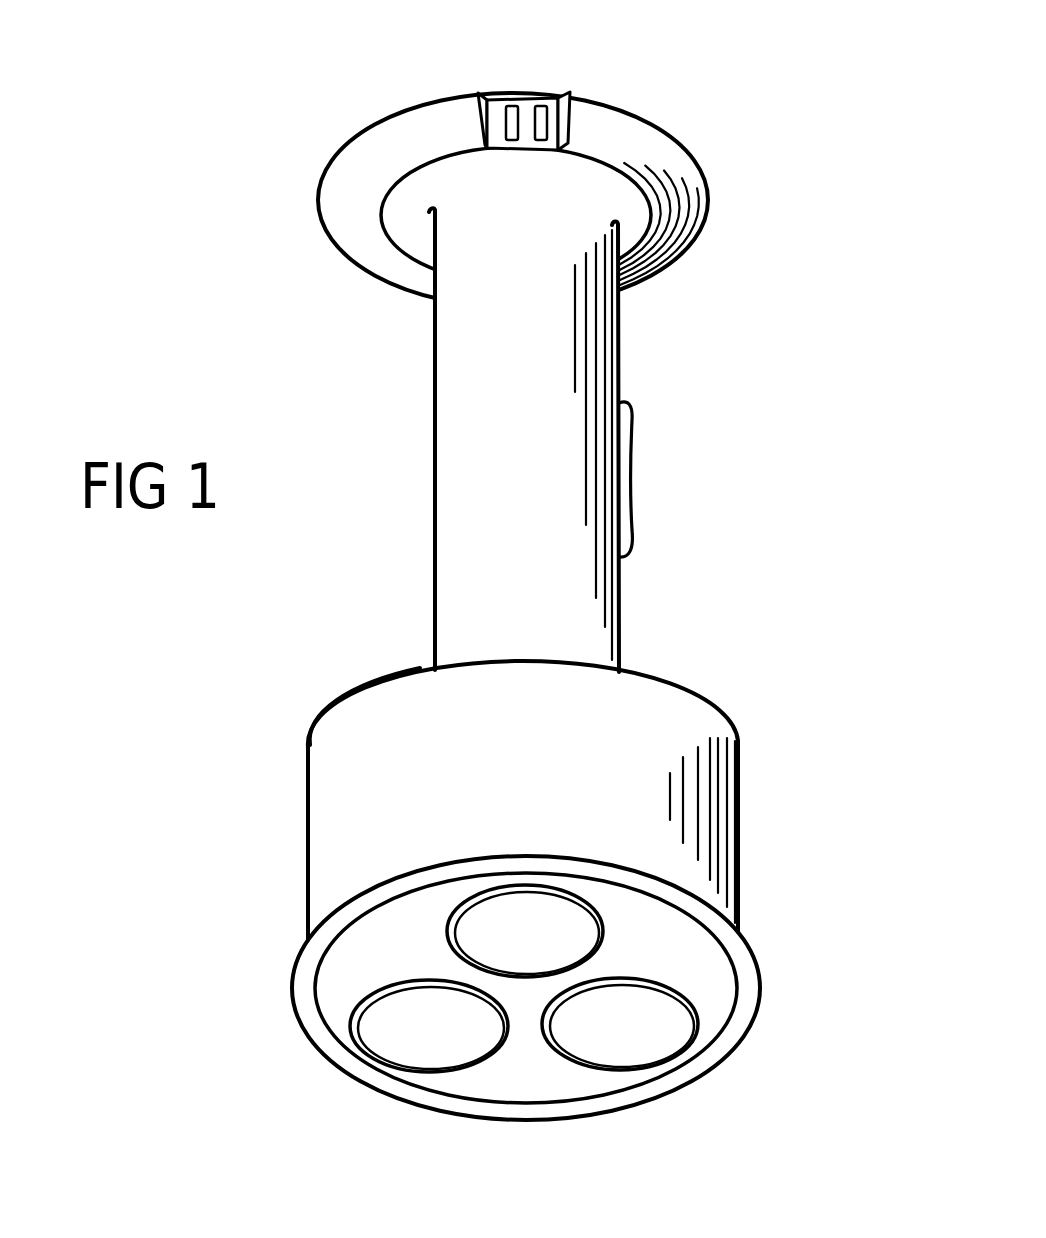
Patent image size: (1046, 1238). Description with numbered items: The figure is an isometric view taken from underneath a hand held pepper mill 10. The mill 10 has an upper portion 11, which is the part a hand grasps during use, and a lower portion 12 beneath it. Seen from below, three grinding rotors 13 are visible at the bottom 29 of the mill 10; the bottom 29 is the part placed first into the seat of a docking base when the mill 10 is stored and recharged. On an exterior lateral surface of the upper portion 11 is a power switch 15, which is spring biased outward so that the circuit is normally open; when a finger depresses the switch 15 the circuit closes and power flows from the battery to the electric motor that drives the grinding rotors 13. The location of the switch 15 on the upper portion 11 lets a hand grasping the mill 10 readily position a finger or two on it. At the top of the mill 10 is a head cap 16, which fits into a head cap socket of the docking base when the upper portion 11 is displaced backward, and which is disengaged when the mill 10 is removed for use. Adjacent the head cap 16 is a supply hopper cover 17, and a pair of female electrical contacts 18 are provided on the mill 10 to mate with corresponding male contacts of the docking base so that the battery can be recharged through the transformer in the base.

The hand held pepper mill 10 is at (787, 570).
The upper portion 11 is at (455, 410).
The lower portion 12 is at (483, 773).
The grinding rotors 13 is at (540, 888).
The power switch 15 is at (622, 413).
The head cap 16 is at (338, 178).
The supply hopper cover 17 is at (322, 698).
The female electrical contacts 18 is at (508, 108).
The bottom 29 is at (517, 1093).